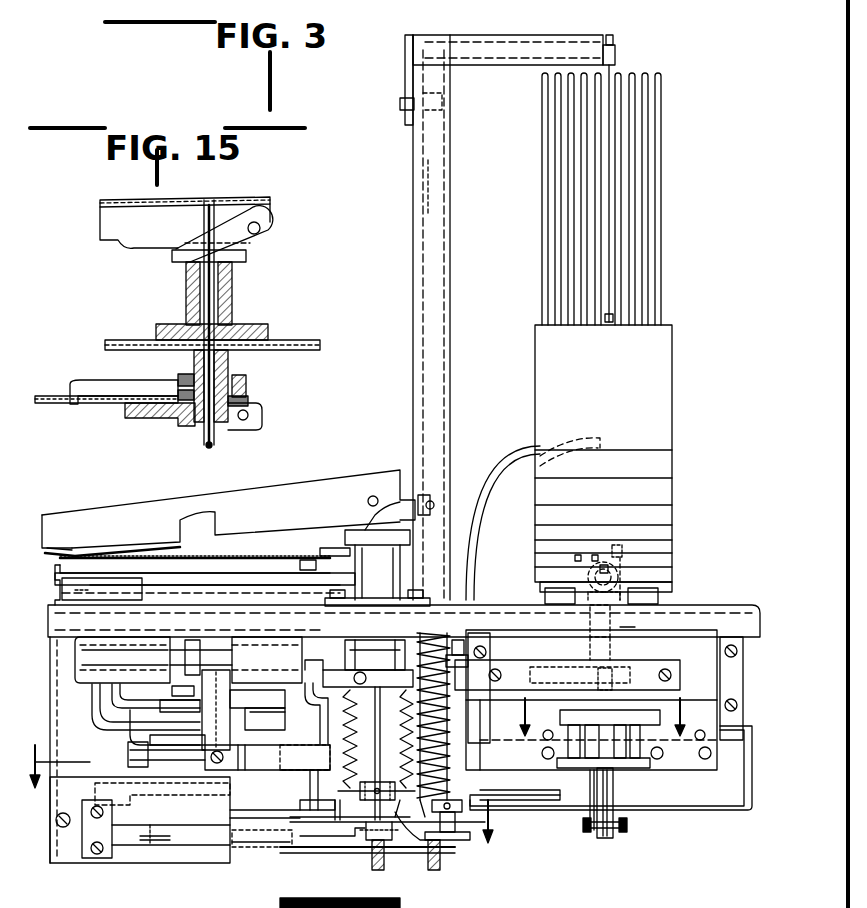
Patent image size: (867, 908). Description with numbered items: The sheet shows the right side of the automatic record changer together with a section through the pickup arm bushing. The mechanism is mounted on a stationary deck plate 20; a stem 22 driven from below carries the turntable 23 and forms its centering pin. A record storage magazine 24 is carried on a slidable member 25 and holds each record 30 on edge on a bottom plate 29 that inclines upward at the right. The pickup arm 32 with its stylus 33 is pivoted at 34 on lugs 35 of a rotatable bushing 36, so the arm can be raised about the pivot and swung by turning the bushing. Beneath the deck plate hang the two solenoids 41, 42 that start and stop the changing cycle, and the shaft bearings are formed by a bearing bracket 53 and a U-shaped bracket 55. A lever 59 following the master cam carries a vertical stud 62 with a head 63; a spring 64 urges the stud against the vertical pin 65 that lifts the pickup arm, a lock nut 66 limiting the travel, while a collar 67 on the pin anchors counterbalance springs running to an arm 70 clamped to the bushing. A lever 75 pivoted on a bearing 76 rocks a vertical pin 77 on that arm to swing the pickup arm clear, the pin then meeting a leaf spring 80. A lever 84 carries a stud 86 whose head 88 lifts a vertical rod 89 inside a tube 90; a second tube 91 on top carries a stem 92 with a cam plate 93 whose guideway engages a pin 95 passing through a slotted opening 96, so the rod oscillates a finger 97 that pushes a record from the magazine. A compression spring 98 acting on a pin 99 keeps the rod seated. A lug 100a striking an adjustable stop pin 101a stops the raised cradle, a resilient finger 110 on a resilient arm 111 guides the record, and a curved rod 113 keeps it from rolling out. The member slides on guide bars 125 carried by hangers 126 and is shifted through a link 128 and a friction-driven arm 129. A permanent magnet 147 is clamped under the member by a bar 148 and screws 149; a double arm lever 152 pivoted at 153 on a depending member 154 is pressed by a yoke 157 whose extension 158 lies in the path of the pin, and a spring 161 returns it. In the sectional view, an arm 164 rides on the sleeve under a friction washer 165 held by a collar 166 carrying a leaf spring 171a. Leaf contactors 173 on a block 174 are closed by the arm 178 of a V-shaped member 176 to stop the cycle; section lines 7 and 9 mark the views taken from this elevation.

In FIG. 3, the section line 7— 7 is at (260, 785).
In FIG. 3, the section line 9— 9 is at (598, 732).
In FIG. 3, the deck plate 20 is at (752, 620).
In FIG. 3, the vertical stem 22 is at (290, 565).
In FIG. 3, the turntable 23 is at (110, 578).
In FIG. 3, the record storage magazine 24 is at (535, 374).
In FIG. 3, the member 25 is at (626, 621).
In FIG. 3, the bottom plate 29 is at (660, 428).
In FIG. 3, the record 30 is at (661, 196).
In FIG. 3, the pickup arm 32 is at (265, 487).
In FIG. 3, the stylus 33 is at (65, 571).
In FIG. 15, the pivot 34 is at (265, 226).
In FIG. 3, the pivot 34 is at (372, 496).
In FIG. 15, the lugs 35 is at (235, 247).
In FIG. 3, the lugs 35 is at (343, 530).
In FIG. 15, the rotatable bushing 36 is at (246, 270).
In FIG. 3, the rotatable bushing 36 is at (345, 540).
In FIG. 3, the solenoid 41 is at (101, 650).
In FIG. 3, the solenoid 42 is at (250, 650).
In FIG. 3, the bearing bracket 53 is at (95, 708).
In FIG. 3, the U-shaped bracket 55 is at (228, 733).
In FIG. 3, the lever 59 is at (285, 850).
In FIG. 3, the vertical stud 62 is at (383, 872).
In FIG. 3, the head 63 is at (400, 822).
In FIG. 3, the spring 64 is at (392, 840).
In FIG. 15, the vertical pin 65 is at (222, 439).
In FIG. 3, the vertical pin 65 is at (375, 742).
In FIG. 3, the lock nut 66 is at (332, 862).
In FIG. 3, the collar 67 is at (370, 790).
In FIG. 15, the arm 70 is at (152, 422).
In FIG. 3, the arm 70 is at (330, 675).
In FIG. 3, the lever 75 is at (285, 812).
In FIG. 3, the bearing 76 is at (322, 800).
In FIG. 3, the vertical pin 77 is at (313, 726).
In FIG. 3, the leaf spring 80 is at (229, 756).
In FIG. 3, the lever 84 is at (305, 852).
In FIG. 3, the stud 86 is at (434, 872).
In FIG. 3, the head 88 is at (446, 826).
In FIG. 3, the vertical rod 89 is at (422, 200).
In FIG. 3, the tube 90 is at (414, 280).
In FIG. 3, the second tube 91 is at (518, 44).
In FIG. 3, the stem 92 is at (616, 54).
In FIG. 3, the cam plate 93 is at (407, 84).
In FIG. 3, the pin 95 is at (400, 104).
In FIG. 3, the slotted opening 96 is at (415, 168).
In FIG. 3, the finger 97 is at (612, 147).
In FIG. 3, the compression spring 98 is at (490, 672).
In FIG. 3, the pin 99 is at (447, 850).
In FIG. 3, the lug 100a is at (622, 546).
In FIG. 3, the adjustable stop pin 101a is at (632, 594).
In FIG. 3, the resilient finger 110 is at (345, 551).
In FIG. 3, the resilient arm 111 is at (217, 568).
In FIG. 3, the curved rod 113 is at (500, 482).
In FIG. 3, the guide bars 125 is at (702, 690).
In FIG. 3, the hangers 126 is at (487, 650).
In FIG. 3, the link 128 is at (305, 756).
In FIG. 3, the arm 129 is at (192, 710).
In FIG. 3, the permanent magnet 147 is at (630, 762).
In FIG. 3, the bar 148 is at (587, 742).
In FIG. 3, the screws 149 is at (575, 742).
In FIG. 3, the double arm lever 152 is at (605, 842).
In FIG. 3, the pivotal mounting 153 is at (622, 827).
In FIG. 3, the member 154 is at (610, 800).
In FIG. 3, the yoke 157 is at (752, 794).
In FIG. 3, the extension 158 is at (515, 800).
In FIG. 3, the spring 161 is at (592, 797).
In FIG. 15, the arm 164 is at (148, 396).
In FIG. 15, the friction washer 165 is at (248, 400).
In FIG. 15, the collar 166 is at (246, 380).
In FIG. 15, the leaf spring 171a is at (85, 385).
In FIG. 3, the leaf contactors 173 is at (205, 832).
In FIG. 3, the block 174 is at (120, 860).
In FIG. 3, the V-shaped member 176 is at (336, 822).
In FIG. 3, the arm 178 is at (271, 850).